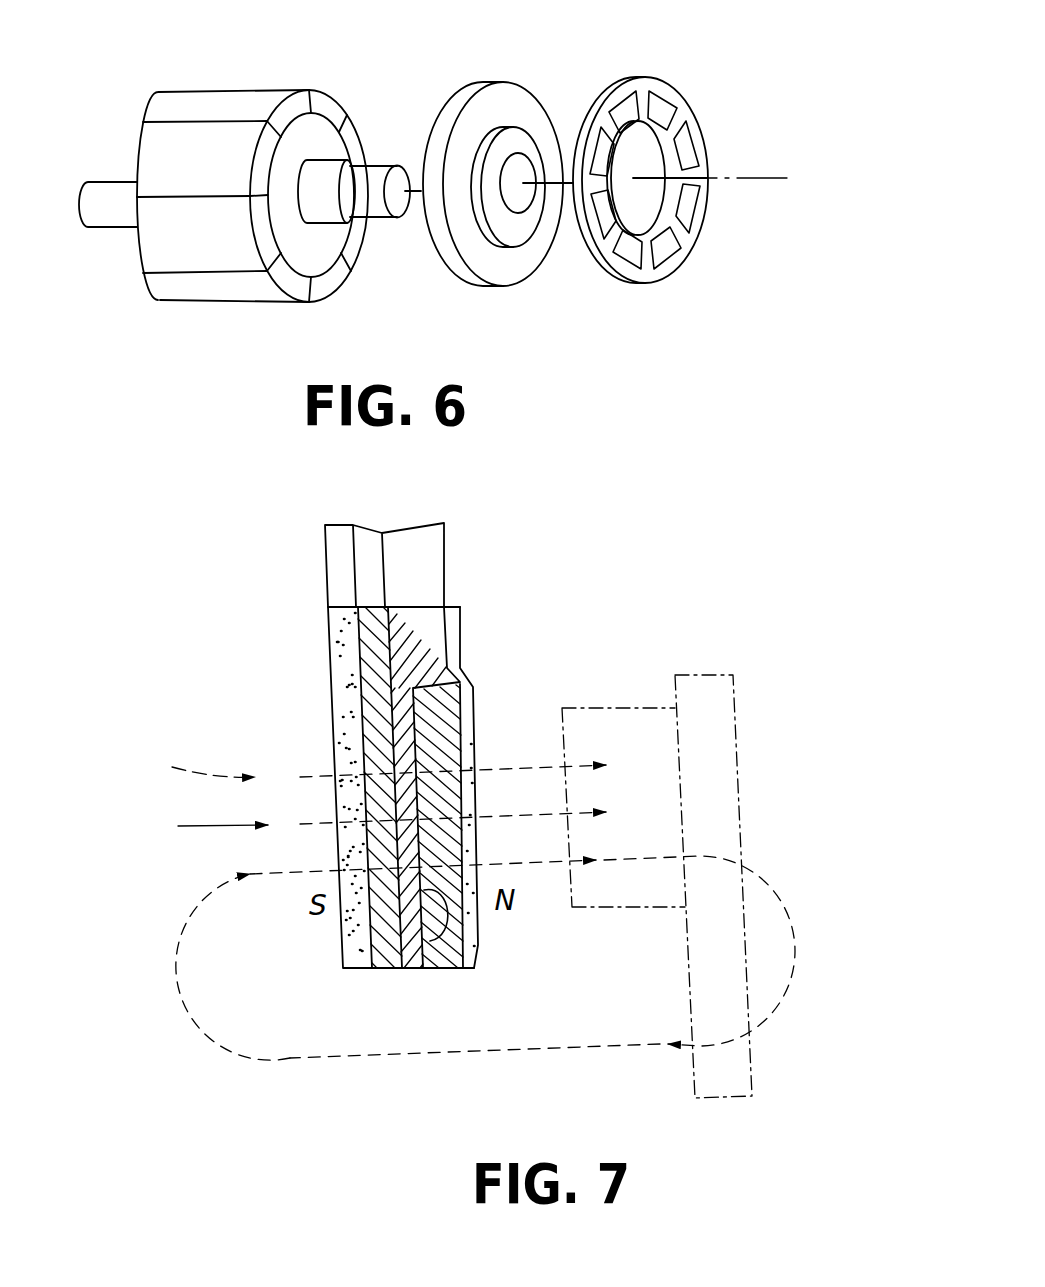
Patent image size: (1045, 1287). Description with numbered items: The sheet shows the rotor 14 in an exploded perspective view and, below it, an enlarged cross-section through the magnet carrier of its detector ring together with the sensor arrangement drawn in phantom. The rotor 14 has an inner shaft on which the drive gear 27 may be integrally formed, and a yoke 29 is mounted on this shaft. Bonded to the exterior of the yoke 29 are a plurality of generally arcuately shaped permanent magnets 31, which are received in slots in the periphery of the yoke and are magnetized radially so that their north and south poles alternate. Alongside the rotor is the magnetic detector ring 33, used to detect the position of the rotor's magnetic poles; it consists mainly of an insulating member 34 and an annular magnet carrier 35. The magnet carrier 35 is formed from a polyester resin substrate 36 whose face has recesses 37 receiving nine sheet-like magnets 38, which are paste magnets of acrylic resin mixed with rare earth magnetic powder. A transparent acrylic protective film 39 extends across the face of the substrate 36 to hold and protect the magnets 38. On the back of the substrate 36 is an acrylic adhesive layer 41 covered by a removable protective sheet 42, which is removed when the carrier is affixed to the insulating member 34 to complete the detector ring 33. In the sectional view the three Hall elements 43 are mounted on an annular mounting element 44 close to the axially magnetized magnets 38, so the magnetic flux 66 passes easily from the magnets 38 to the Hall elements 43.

In FIG. 6, the rotor 14 is at (228, 311).
In FIG. 6, the drive gear 27 is at (108, 178).
In FIG. 6, the yoke 29 is at (316, 142).
In FIG. 6, the permanent magnets 31 is at (190, 284).
In FIG. 6, the magnetic detector ring 33 is at (610, 191).
In FIG. 6, the insulating member 34 is at (520, 287).
In FIG. 6, the magnet carrier 35 is at (685, 171).
In FIG. 7, the magnet carrier 35 is at (351, 771).
In FIG. 6, the substrate 36 is at (642, 78).
In FIG. 7, the substrate 36 is at (430, 598).
In FIG. 7, the recesses 37 is at (429, 968).
In FIG. 6, the sheet like magnets 38 is at (667, 107).
In FIG. 7, the sheet like magnets 38 is at (443, 722).
In FIG. 7, the protective film 39 is at (463, 628).
In FIG. 7, the acrylic adhesive layer 41 is at (365, 600).
In FIG. 7, the removable protective sheet 42 is at (333, 628).
In FIG. 7, the Hall elements 43 is at (623, 705).
In FIG. 7, the annular mounting element 44 is at (740, 700).
In FIG. 7, the magnetic flux 66 is at (518, 1060).